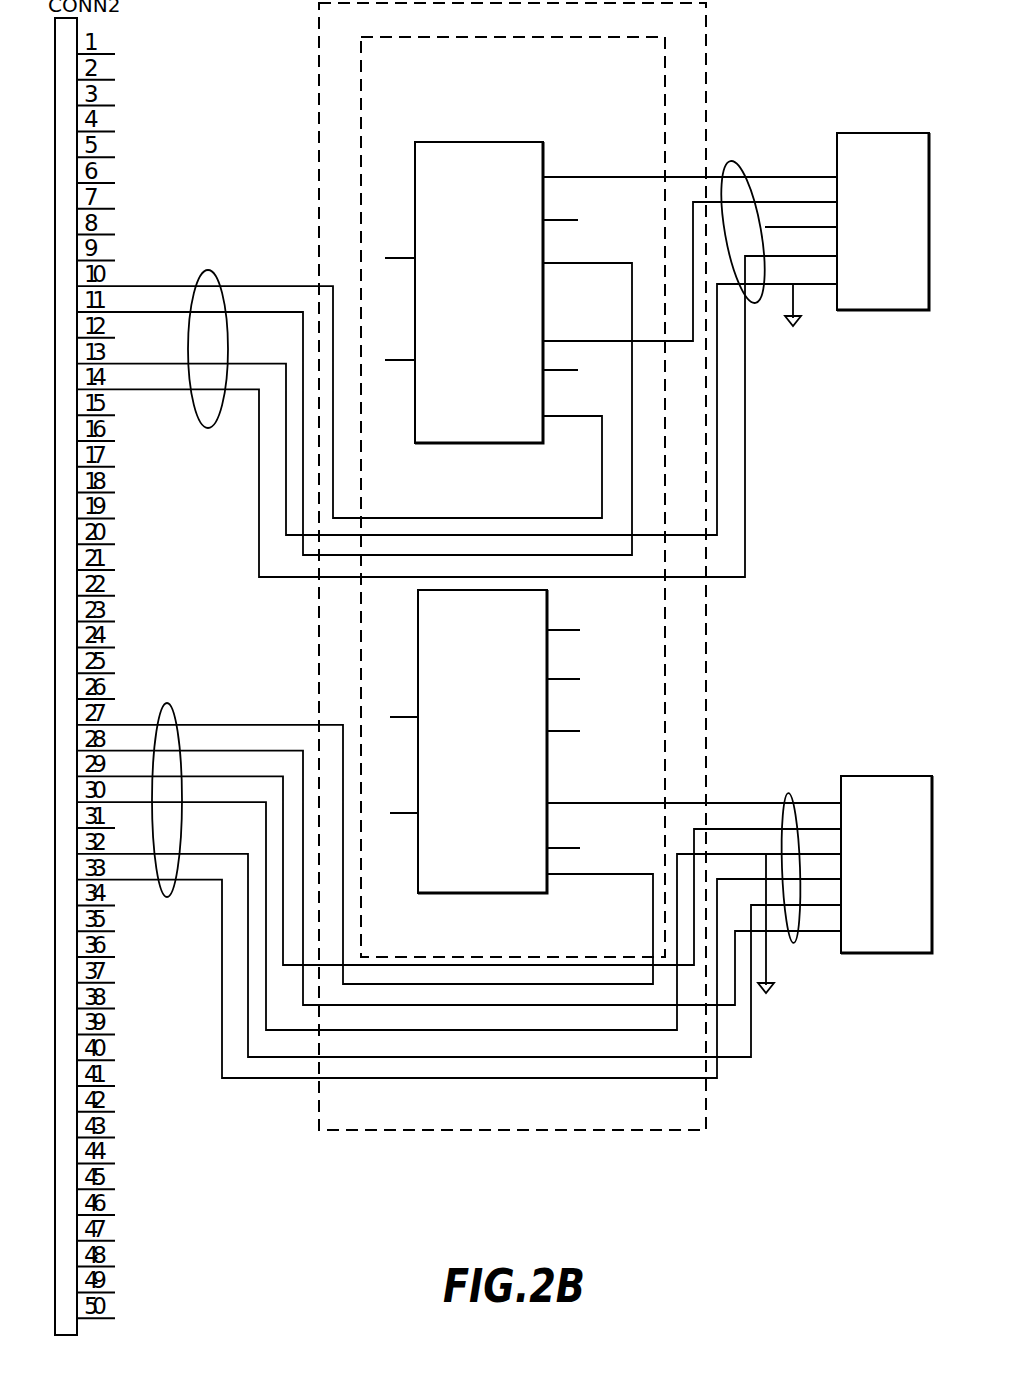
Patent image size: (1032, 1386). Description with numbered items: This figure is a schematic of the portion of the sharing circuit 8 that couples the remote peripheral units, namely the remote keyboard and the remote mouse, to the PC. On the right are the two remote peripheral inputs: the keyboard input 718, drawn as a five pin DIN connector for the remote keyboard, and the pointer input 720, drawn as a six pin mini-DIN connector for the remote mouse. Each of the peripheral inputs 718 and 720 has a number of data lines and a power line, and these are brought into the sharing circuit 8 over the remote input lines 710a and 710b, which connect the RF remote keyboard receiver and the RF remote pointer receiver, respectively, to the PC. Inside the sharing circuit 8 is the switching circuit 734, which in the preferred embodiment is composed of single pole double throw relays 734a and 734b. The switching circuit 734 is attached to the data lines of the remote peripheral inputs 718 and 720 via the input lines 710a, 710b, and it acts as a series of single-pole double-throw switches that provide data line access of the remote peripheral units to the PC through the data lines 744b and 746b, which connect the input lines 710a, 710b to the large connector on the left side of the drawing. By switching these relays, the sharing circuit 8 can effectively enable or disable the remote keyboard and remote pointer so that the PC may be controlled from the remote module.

The sharing circuit 8 is at (507, 1131).
The switching circuit 734 is at (358, 192).
The single pole double throw relay 734a is at (499, 306).
The single pole double throw relay 734b is at (502, 767).
The data line 744b is at (209, 428).
The data line 746b is at (167, 897).
The remote input line 710a is at (730, 162).
The remote input line 710b is at (788, 795).
The peripheral input 718 is at (849, 251).
The peripheral input 720 is at (848, 907).